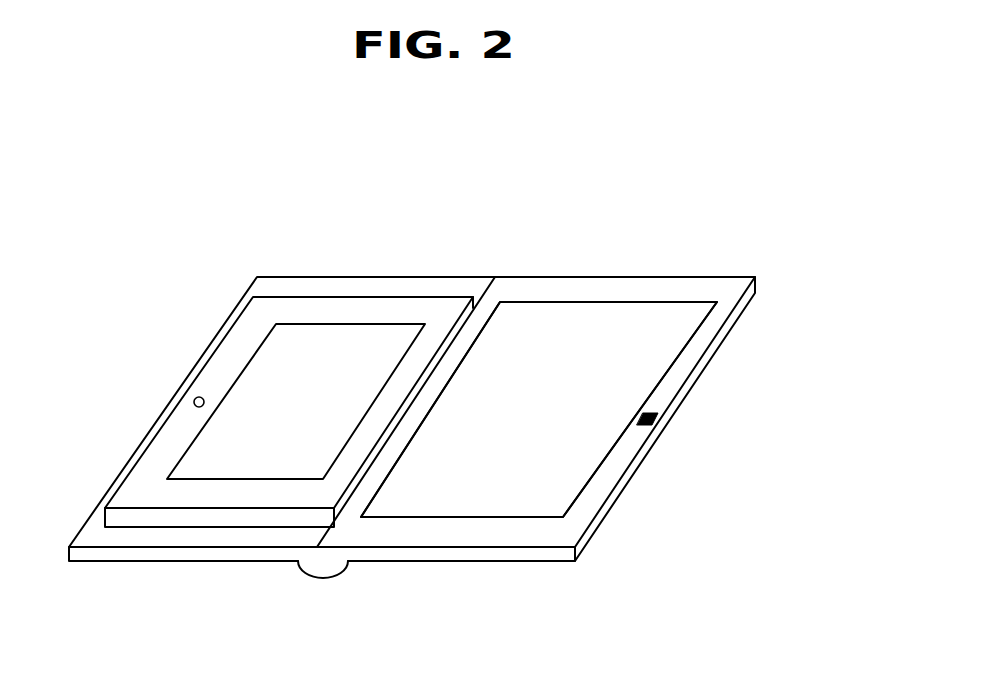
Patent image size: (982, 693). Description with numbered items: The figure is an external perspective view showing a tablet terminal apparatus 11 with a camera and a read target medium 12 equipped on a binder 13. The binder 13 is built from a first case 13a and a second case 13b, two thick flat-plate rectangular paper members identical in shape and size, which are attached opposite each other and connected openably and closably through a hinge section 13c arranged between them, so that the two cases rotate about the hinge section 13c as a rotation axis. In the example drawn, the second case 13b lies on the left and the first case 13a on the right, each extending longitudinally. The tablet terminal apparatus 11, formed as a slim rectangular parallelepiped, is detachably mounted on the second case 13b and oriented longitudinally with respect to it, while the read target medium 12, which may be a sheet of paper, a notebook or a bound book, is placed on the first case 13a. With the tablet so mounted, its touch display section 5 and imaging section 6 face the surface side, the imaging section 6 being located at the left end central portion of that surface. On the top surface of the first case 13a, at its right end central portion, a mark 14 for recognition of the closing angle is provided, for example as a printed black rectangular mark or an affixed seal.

The touch display section 5 is at (282, 344).
The imaging section 6 is at (193, 400).
The tablet terminal apparatus 11 is at (363, 293).
The read target medium 12 is at (563, 340).
The binder 13 is at (375, 565).
The first case 13a is at (463, 562).
The second case 13b is at (120, 553).
The hinge section 13c is at (323, 568).
The mark for recognition of closing angle 14 is at (643, 424).